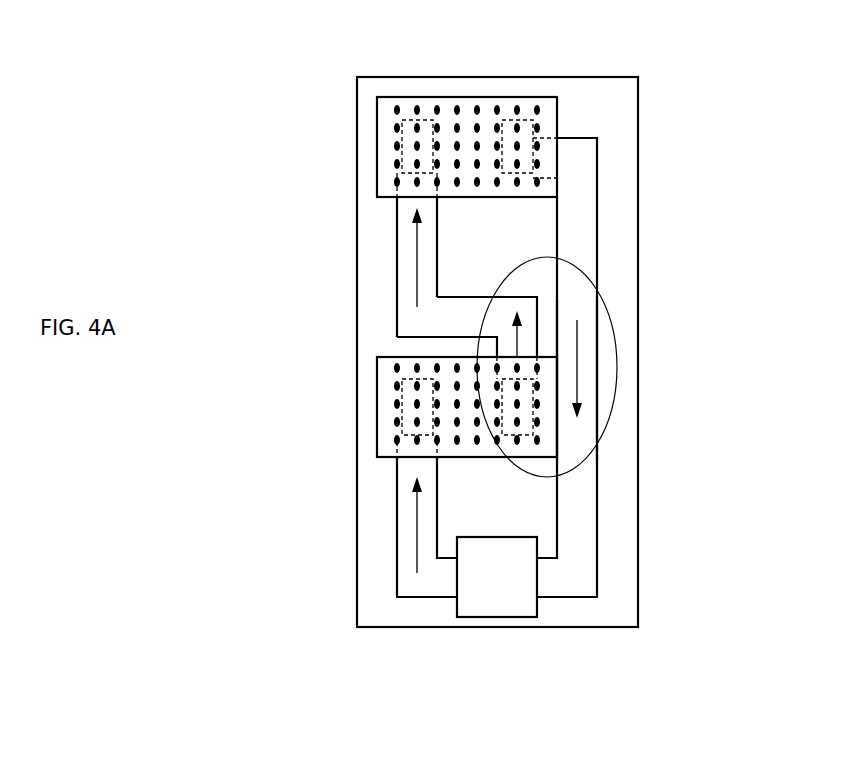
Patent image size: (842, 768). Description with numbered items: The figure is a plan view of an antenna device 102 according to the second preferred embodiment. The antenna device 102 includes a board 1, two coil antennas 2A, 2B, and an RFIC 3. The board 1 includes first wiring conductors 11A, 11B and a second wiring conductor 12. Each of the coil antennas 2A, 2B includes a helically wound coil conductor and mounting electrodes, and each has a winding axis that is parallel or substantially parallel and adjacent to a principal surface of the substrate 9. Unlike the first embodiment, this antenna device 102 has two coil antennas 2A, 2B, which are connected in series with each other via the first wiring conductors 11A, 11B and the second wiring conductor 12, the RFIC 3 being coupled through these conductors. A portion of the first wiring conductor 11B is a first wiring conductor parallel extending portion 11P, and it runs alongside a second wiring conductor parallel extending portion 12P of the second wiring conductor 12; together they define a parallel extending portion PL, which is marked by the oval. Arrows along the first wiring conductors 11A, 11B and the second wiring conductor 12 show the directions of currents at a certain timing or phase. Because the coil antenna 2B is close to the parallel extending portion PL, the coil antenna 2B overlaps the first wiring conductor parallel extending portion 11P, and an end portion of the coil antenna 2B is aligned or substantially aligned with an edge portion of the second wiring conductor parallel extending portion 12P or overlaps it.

The antenna device 102 is at (433, 27).
The board 1 is at (652, 97).
The substrate 9 is at (627, 87).
The coil antenna 2A is at (370, 147).
The coil antenna 2B is at (370, 407).
The first wiring conductor 11A is at (407, 520).
The first wiring conductor 11B is at (407, 262).
The first wiring conductor parallel extending portion 11P is at (527, 326).
The second wiring conductor 12 is at (585, 210).
The second wiring conductor parallel extending portion 12P is at (578, 438).
The parallel extending portion PL is at (617, 364).
The RFIC 3 is at (498, 597).